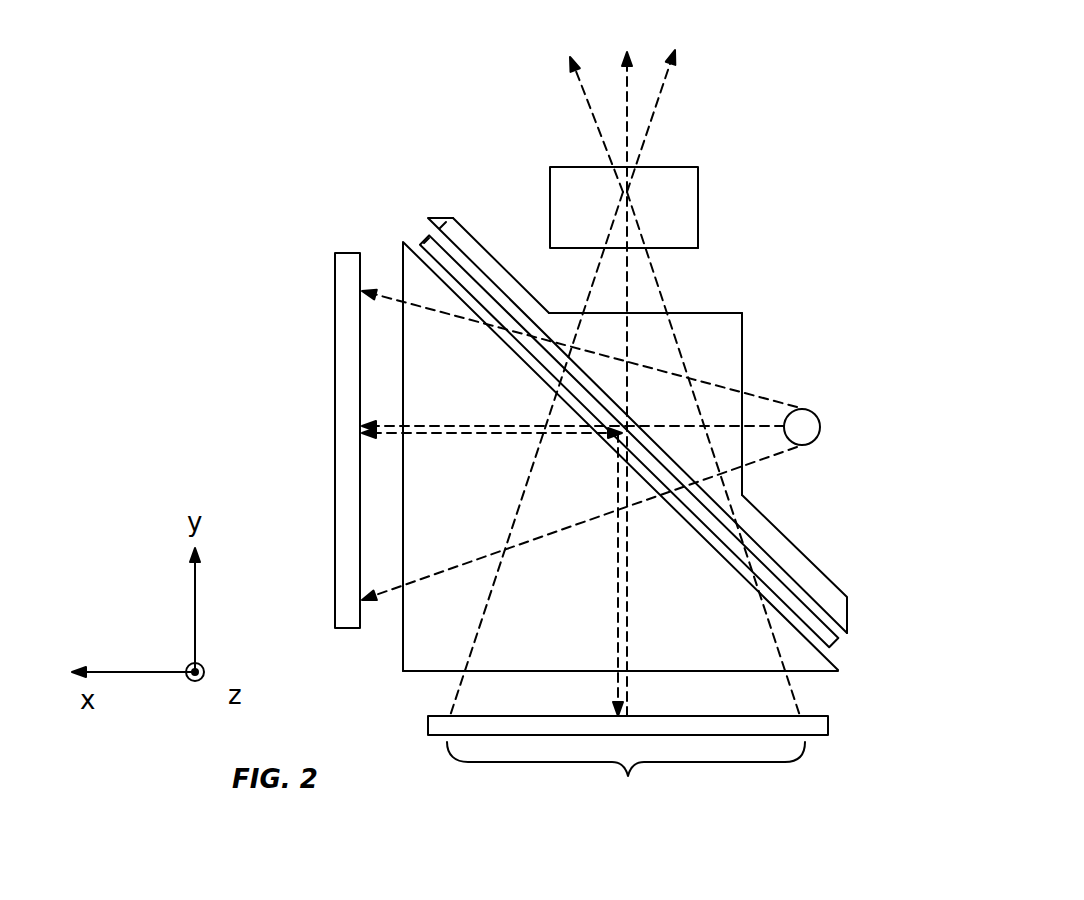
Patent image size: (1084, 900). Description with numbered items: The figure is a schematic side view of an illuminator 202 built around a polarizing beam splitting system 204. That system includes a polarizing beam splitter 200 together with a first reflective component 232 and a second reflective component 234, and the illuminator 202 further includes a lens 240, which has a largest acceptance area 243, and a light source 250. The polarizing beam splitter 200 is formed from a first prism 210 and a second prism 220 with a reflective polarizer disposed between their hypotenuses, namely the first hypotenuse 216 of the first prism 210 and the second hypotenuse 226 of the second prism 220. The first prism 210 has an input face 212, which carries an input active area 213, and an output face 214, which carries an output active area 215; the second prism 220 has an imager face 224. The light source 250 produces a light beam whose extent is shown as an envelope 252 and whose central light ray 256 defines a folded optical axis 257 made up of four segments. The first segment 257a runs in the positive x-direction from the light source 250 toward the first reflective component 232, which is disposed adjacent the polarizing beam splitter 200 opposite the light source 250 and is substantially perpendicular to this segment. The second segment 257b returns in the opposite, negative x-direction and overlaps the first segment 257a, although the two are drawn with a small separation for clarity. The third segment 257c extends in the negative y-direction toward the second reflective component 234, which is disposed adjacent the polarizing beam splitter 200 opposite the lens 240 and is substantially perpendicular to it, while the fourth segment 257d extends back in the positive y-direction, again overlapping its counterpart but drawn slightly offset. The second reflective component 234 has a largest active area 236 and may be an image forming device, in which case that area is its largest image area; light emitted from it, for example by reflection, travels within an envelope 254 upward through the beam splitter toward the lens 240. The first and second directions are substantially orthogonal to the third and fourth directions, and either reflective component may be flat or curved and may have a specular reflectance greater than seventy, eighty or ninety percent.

The illuminator 202 is at (162, 178).
The polarizing beam splitting system 204 is at (233, 392).
The polarizing beam splitter 200 is at (388, 242).
The first prism 210 is at (446, 220).
The lens 240 is at (570, 208).
The largest acceptance area 243 is at (632, 248).
The output active area 215 is at (643, 311).
The output face 214 is at (707, 311).
The input face 212 is at (742, 340).
The envelope 252 is at (708, 382).
The input active area 213 is at (743, 412).
The light source 250 is at (805, 432).
The first hypotenuse 216 is at (812, 600).
The second hypotenuse 226 is at (822, 653).
The envelope 254 is at (475, 640).
The second reflective component 234 is at (828, 724).
The largest active area 236 is at (626, 775).
The imager face 224 is at (426, 673).
The second prism 220 is at (428, 614).
The first reflective component 232 is at (346, 522).
The central light ray 256 is at (623, 80).
The folded optical axis 257 is at (625, 115).
The first segment 257a is at (476, 424).
The second segment 257b is at (488, 434).
The third segment 257c is at (617, 590).
The fourth segment 257d is at (630, 578).